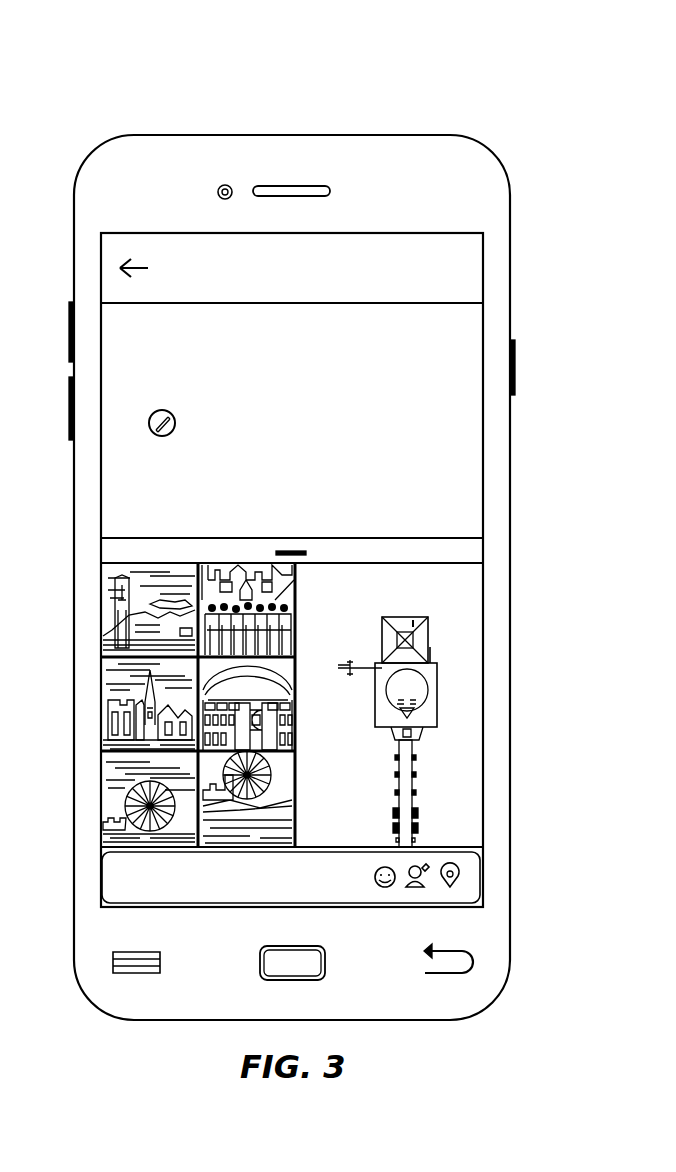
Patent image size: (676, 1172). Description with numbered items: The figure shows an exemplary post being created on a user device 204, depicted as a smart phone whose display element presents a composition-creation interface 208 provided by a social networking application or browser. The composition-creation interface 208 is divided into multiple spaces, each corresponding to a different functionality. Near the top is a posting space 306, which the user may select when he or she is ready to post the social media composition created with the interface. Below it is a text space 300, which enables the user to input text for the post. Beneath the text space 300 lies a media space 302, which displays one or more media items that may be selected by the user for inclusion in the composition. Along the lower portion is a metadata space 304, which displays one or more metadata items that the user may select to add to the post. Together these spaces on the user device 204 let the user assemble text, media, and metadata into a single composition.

The user device 204 is at (178, 134).
The composition-creation interface 208 is at (483, 332).
The posting space 306 is at (460, 272).
The text space 300 is at (453, 467).
The media space 302 is at (468, 687).
The metadata space 304 is at (118, 898).